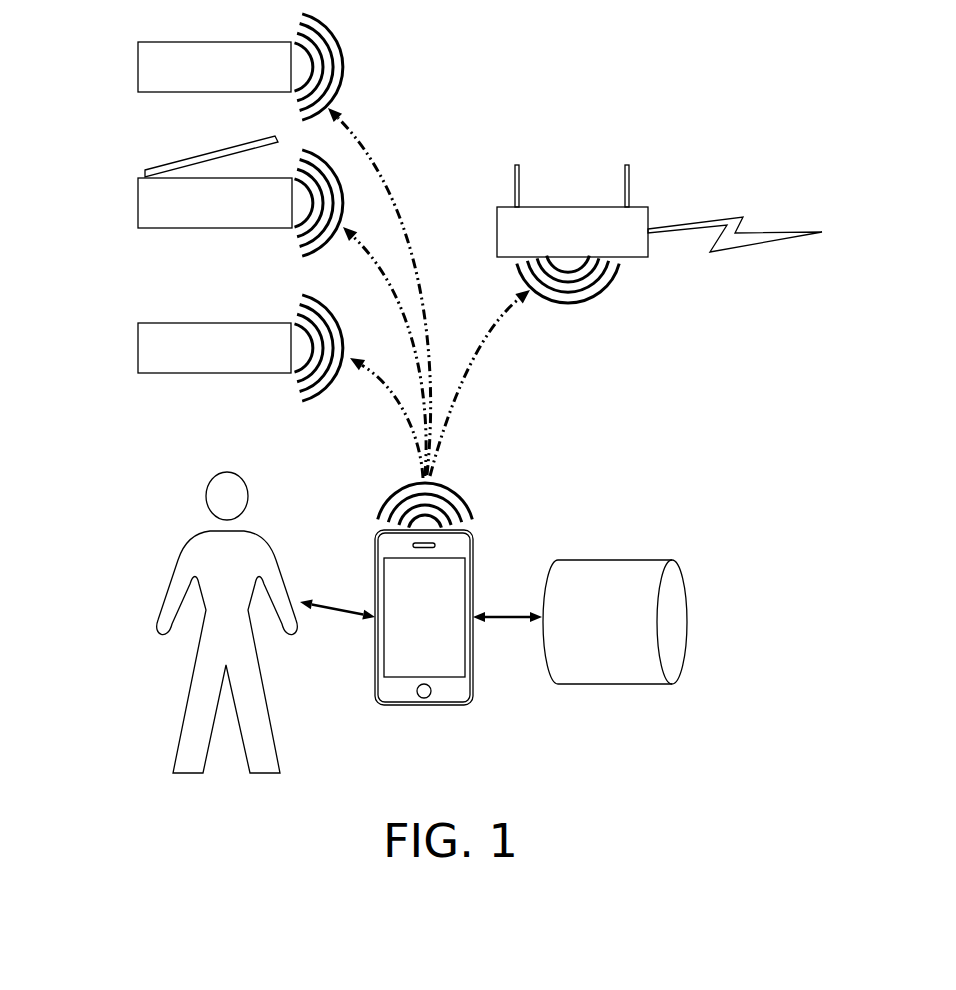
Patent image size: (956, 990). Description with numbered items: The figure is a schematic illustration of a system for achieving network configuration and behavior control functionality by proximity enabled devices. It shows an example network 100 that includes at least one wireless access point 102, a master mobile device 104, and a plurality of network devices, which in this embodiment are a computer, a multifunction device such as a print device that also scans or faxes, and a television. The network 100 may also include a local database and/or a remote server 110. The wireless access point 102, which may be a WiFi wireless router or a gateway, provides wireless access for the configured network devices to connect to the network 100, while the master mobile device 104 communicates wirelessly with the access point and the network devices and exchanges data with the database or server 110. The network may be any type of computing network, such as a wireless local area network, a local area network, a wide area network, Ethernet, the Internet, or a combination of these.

The network 100 is at (760, 233).
The wireless access point 102 is at (637, 258).
The master mobile device 104 is at (422, 705).
The local database and/or remote server 110 is at (670, 621).